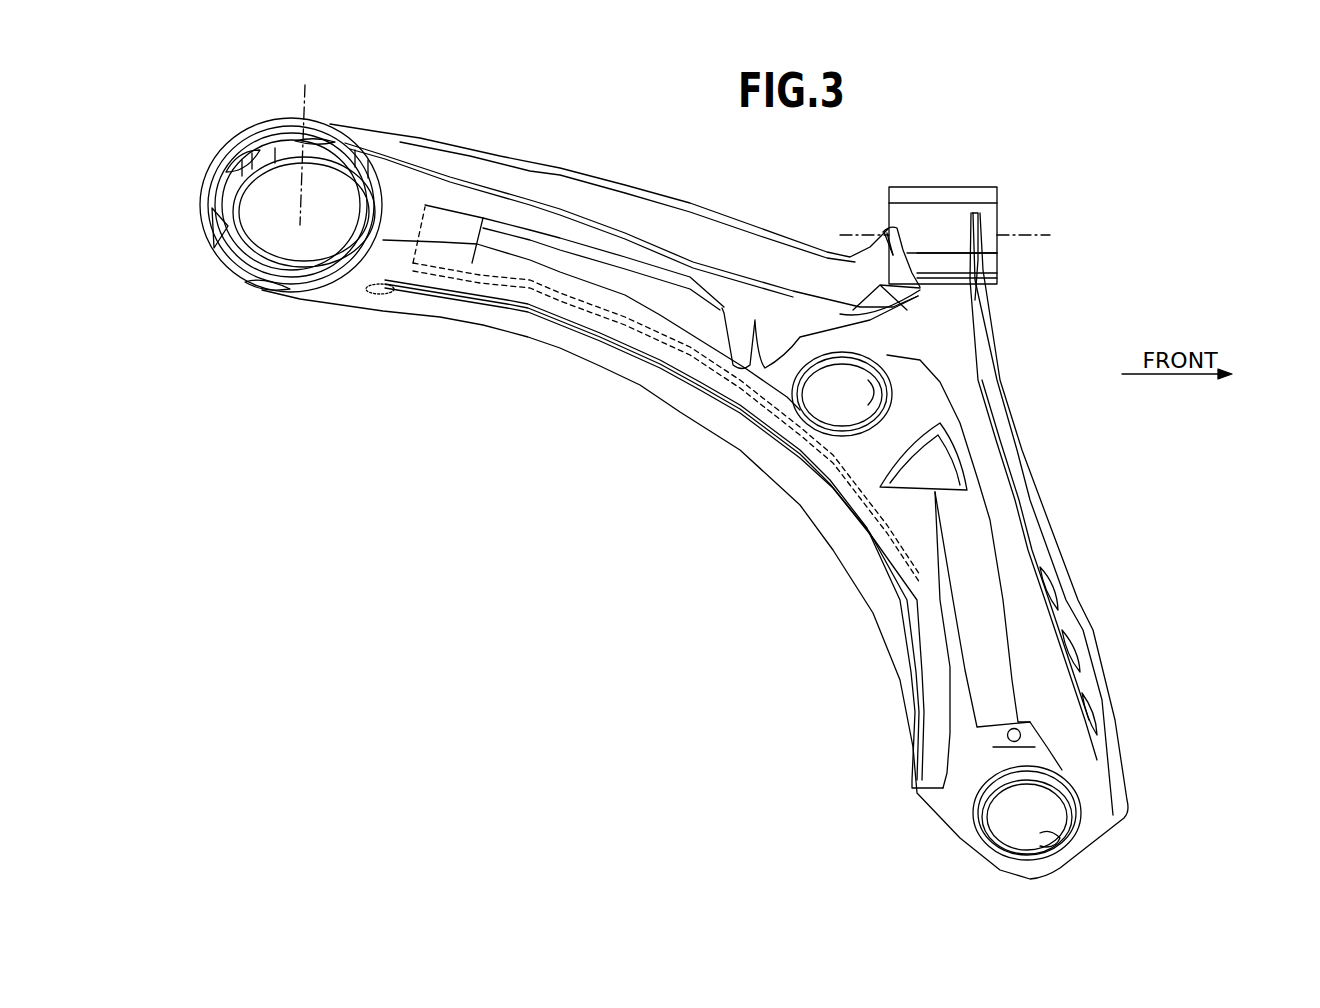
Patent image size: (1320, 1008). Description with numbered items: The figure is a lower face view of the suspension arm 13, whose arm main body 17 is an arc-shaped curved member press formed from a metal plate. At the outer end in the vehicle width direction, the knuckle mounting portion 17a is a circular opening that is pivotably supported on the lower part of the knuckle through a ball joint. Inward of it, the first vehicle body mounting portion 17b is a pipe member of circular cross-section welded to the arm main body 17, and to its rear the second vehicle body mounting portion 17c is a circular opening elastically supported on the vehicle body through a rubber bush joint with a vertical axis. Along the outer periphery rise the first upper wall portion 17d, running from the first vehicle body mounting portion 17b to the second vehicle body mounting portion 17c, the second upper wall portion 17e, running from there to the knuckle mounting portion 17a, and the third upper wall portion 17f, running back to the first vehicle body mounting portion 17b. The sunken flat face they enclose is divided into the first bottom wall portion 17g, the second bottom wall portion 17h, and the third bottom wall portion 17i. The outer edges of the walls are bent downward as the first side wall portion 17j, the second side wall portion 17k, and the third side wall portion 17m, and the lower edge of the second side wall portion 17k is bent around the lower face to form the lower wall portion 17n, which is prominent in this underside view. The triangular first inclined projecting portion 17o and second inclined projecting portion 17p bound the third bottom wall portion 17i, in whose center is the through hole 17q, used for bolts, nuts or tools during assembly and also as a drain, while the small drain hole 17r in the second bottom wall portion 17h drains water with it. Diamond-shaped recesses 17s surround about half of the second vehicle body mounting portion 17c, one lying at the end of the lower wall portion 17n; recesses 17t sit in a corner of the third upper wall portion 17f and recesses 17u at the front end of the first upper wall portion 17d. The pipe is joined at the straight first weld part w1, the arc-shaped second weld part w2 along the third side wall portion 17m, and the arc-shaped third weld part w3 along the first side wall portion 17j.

The suspension arm 13 is at (722, 488).
The arm main body 17 is at (1040, 483).
The knuckle mounting portion 17a is at (1055, 837).
The first vehicle body mounting portion 17b is at (945, 198).
The second vehicle body mounting portion 17c is at (350, 160).
The first upper wall portion 17d is at (580, 228).
The second upper wall portion 17e is at (963, 735).
The third upper wall portion 17f is at (987, 440).
The first bottom wall portion 17g is at (722, 337).
The second bottom wall portion 17h is at (985, 619).
The third bottom wall portion 17i is at (974, 562).
The first side wall portion 17j is at (668, 218).
The second side wall portion 17k is at (663, 383).
The third side wall portion 17m is at (1040, 537).
The lower wall portion 17n is at (650, 313).
The first inclined projecting portion 17o is at (763, 340).
The second inclined projecting portion 17p is at (932, 480).
The through hole 17q is at (870, 390).
The drain hole 17r is at (1015, 729).
The recesses 17s is at (232, 158).
The recesses 17t is at (1093, 713).
The recesses 17u is at (880, 271).
The first weld part w1 is at (942, 290).
The second weld part w2 is at (978, 272).
The third weld part w3 is at (893, 252).